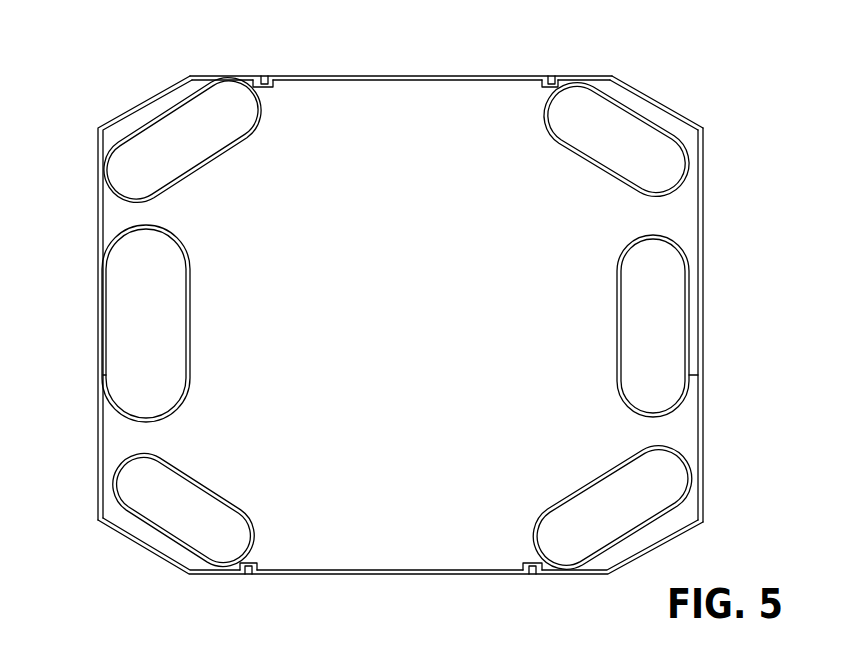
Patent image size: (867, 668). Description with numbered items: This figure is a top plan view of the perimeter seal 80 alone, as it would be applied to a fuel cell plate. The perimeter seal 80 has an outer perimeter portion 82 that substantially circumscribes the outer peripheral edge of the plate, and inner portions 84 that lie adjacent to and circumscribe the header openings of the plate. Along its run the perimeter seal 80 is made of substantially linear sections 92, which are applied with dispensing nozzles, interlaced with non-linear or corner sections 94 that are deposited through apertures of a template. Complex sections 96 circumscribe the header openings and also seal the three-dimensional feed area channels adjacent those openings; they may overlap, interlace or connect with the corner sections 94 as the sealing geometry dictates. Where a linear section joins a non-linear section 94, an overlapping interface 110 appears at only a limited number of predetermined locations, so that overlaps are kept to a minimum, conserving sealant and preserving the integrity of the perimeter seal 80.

The perimeter seal 80 is at (398, 325).
The outer perimeter portion 82 is at (566, 72).
The inner portion 84 is at (645, 102).
The linear section 92 is at (405, 76).
The non-linear section 94 is at (98, 521).
The complex section 96 is at (112, 480).
The overlapping interface 110 is at (263, 76).